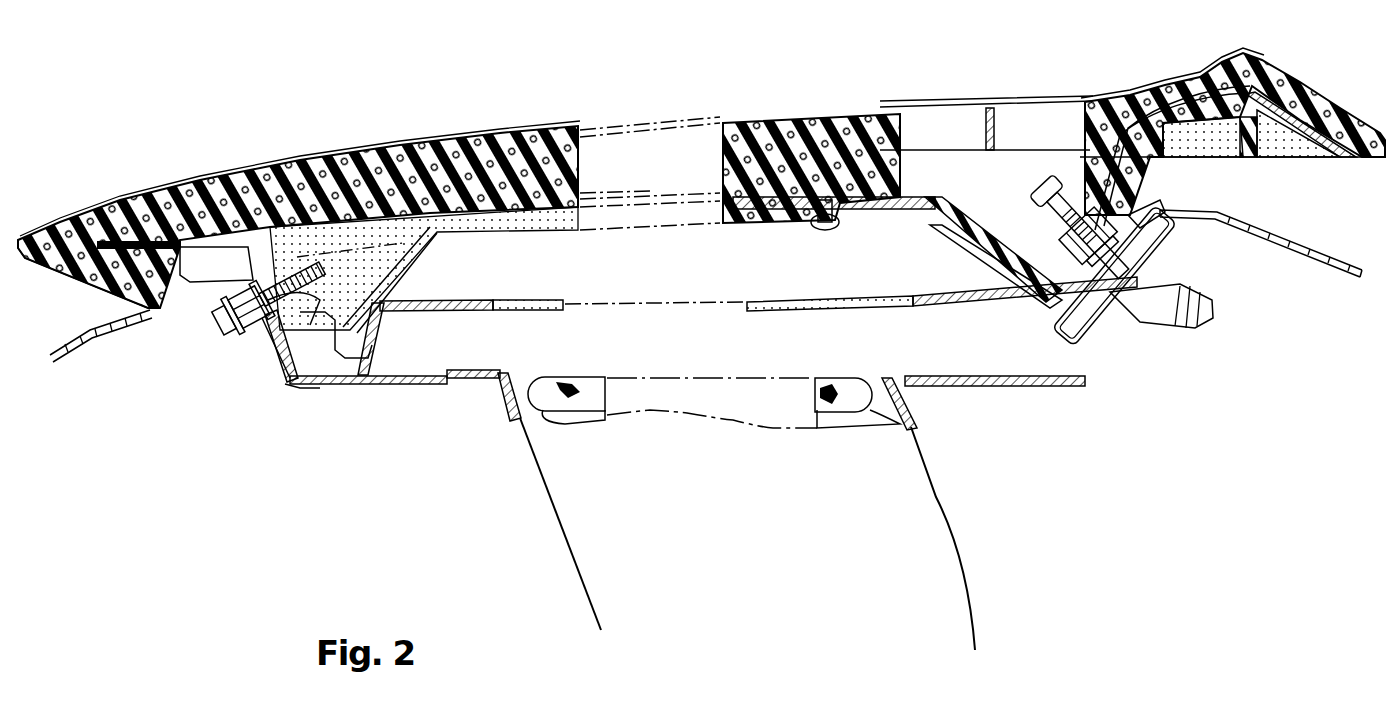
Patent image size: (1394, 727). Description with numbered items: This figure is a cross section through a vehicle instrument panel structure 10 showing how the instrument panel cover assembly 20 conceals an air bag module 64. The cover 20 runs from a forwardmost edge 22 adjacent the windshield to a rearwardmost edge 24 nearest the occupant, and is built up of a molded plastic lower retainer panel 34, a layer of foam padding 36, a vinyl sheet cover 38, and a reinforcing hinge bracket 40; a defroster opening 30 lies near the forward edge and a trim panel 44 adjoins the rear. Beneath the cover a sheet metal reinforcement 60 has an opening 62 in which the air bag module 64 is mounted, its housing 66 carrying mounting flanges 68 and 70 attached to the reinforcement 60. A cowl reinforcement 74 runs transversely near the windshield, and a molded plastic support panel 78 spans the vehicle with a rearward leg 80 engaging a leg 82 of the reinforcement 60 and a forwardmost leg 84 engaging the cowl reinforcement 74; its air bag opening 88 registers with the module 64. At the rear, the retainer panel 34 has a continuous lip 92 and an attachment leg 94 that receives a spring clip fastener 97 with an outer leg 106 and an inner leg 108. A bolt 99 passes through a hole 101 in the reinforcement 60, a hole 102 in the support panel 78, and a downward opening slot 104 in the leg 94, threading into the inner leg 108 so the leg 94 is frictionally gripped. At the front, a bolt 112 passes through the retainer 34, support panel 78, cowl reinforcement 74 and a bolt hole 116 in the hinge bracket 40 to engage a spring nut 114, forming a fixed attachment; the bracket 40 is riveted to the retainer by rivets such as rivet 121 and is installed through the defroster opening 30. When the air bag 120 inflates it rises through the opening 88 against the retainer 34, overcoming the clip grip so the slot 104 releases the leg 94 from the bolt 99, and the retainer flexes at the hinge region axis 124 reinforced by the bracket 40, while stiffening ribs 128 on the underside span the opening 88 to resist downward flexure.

The instrument panel structure 10 is at (168, 126).
The instrument panel cover assembly 20 is at (521, 130).
The forwardmost edge 22 is at (1343, 110).
The rearwardmost edge 24 is at (40, 235).
The defroster opening 30 is at (876, 110).
The molded plastic lower retainer panel 34 is at (727, 197).
The layer of foam padding 36 is at (723, 150).
The vinyl sheet cover 38 is at (735, 125).
The reinforcing hinge bracket 40 is at (978, 210).
The trim panel 44 is at (95, 315).
The sheet metal reinforcement 60 is at (380, 392).
The opening 62 is at (500, 390).
The air bag module 64 is at (580, 500).
The housing 66 is at (940, 492).
The mounting flange 68 is at (916, 378).
The mounting flange 70 is at (465, 370).
The cowl reinforcement 74 is at (1305, 250).
The molded plastic support panel 78 is at (469, 298).
The rearward leg 80 is at (245, 268).
The leg 82 is at (296, 382).
The forwardmost leg 84 is at (1143, 234).
The air bag opening 88 is at (520, 292).
The continuous lip 92 is at (277, 255).
The attachment leg 94 is at (405, 250).
The spring clip fastener 97 is at (314, 342).
The bolt 99 is at (240, 308).
The hole 101 is at (245, 318).
The hole 102 is at (268, 322).
The downward opening slot 104 is at (278, 350).
The outer leg 106 is at (283, 265).
The inner leg 108 is at (293, 243).
The bolt 112 is at (1047, 200).
The spring nut 114 is at (1105, 330).
The bolt hole 116 is at (1060, 200).
The air bag 120 is at (587, 385).
The rivet 121 is at (815, 227).
The hinge region axis 124 is at (985, 268).
The stiffening ribs 128 is at (565, 218).